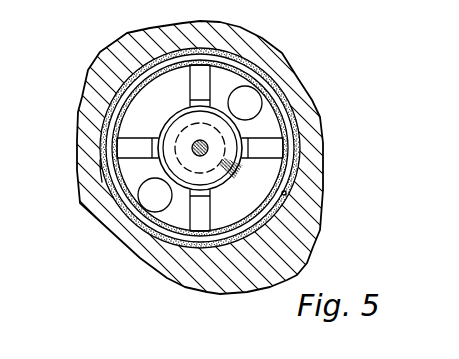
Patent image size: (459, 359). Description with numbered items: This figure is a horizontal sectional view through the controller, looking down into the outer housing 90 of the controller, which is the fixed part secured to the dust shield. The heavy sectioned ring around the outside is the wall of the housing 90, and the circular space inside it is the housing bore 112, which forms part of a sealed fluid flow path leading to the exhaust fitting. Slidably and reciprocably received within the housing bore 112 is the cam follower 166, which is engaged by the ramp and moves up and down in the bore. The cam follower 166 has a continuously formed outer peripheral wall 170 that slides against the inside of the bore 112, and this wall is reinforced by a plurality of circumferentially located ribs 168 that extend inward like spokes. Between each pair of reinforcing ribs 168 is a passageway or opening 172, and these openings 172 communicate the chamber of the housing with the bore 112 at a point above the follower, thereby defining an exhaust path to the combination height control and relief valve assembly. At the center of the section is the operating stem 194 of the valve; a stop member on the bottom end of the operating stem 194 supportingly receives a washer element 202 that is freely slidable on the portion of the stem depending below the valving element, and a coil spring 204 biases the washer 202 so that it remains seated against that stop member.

The outer housing 90 is at (110, 62).
The housing bore 112 is at (286, 193).
The cam follower 166 is at (300, 145).
The ribs 168 is at (205, 78).
The outer peripheral wall 170 is at (151, 70).
The passageway 172 is at (250, 86).
The operating stem 194 is at (207, 156).
The washer element 202 is at (186, 113).
The coil spring 204 is at (100, 171).